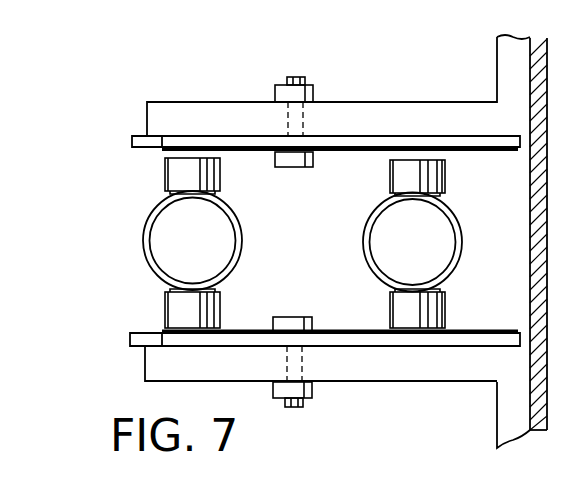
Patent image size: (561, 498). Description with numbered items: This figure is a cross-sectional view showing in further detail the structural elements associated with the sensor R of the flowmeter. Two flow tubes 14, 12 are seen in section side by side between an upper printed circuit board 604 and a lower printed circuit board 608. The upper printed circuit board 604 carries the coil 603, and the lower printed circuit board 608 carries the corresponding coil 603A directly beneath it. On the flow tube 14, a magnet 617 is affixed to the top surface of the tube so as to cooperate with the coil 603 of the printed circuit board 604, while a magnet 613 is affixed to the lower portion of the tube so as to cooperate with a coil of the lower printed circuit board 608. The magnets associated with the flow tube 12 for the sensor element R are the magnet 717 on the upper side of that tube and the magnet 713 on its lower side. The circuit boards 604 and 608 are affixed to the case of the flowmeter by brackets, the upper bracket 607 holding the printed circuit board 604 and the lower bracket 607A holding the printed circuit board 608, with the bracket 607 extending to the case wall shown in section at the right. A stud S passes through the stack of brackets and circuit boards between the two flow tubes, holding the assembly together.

The bracket 607 is at (220, 108).
The bracket lower plate 607A is at (355, 372).
The printed circuit board 604 is at (132, 138).
The lower printed circuit board 608 is at (130, 338).
The coil 603 is at (244, 150).
The coil 603A is at (245, 331).
The stud bolt S is at (293, 168).
The magnet 617 is at (165, 173).
The magnet 613 is at (165, 305).
The magnet 717 is at (390, 178).
The magnet 713 is at (445, 310).
The flow tube 14 is at (207, 251).
The flow tube 12 is at (433, 251).
The sensor R is at (364, 102).